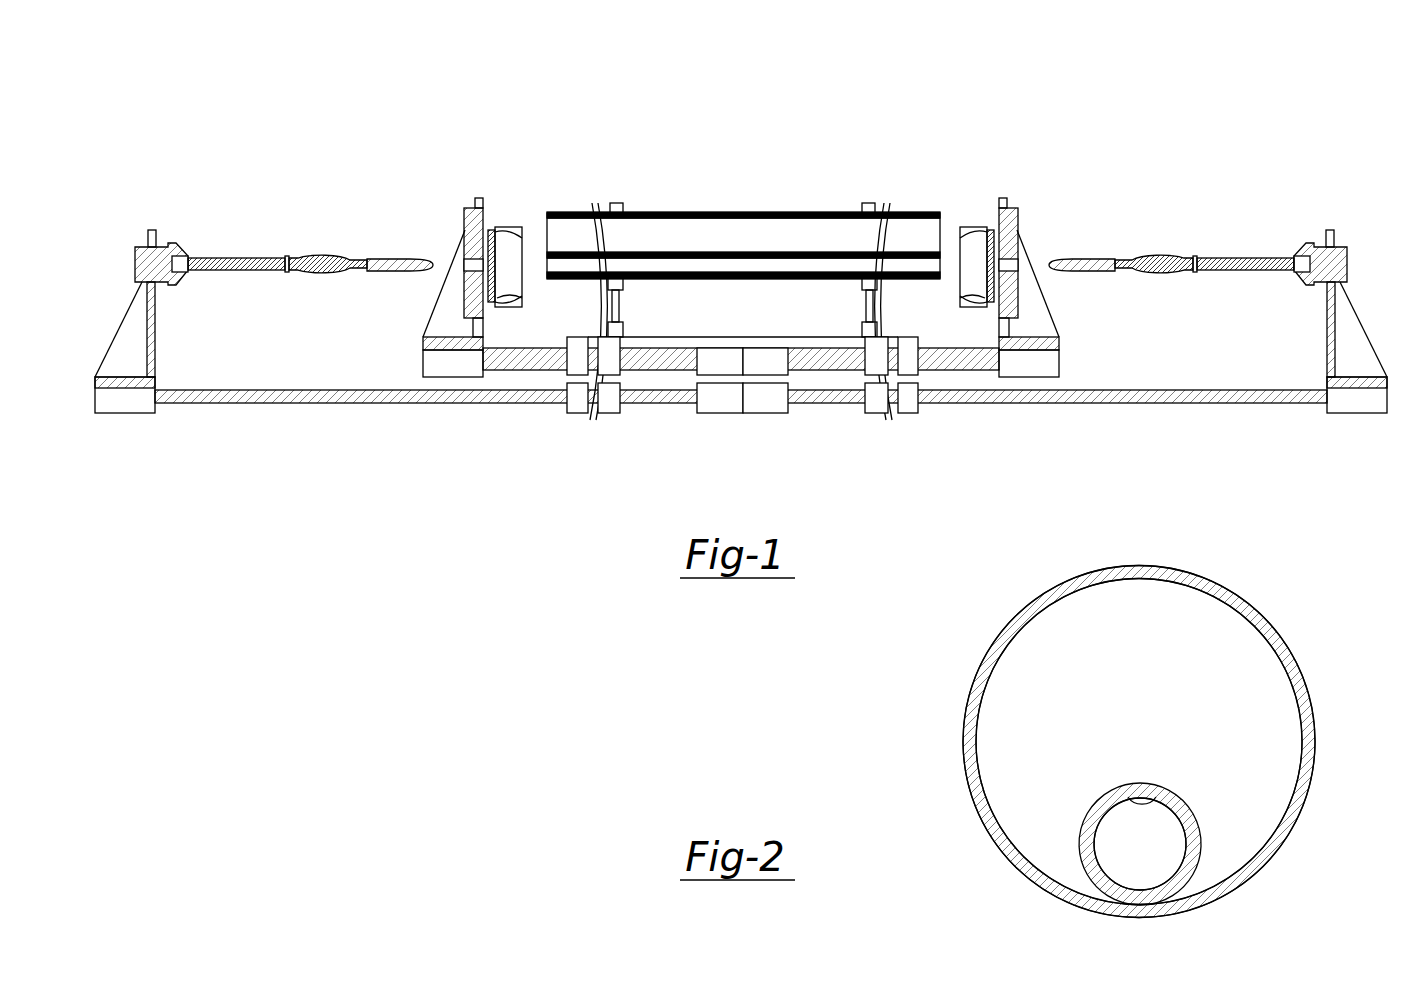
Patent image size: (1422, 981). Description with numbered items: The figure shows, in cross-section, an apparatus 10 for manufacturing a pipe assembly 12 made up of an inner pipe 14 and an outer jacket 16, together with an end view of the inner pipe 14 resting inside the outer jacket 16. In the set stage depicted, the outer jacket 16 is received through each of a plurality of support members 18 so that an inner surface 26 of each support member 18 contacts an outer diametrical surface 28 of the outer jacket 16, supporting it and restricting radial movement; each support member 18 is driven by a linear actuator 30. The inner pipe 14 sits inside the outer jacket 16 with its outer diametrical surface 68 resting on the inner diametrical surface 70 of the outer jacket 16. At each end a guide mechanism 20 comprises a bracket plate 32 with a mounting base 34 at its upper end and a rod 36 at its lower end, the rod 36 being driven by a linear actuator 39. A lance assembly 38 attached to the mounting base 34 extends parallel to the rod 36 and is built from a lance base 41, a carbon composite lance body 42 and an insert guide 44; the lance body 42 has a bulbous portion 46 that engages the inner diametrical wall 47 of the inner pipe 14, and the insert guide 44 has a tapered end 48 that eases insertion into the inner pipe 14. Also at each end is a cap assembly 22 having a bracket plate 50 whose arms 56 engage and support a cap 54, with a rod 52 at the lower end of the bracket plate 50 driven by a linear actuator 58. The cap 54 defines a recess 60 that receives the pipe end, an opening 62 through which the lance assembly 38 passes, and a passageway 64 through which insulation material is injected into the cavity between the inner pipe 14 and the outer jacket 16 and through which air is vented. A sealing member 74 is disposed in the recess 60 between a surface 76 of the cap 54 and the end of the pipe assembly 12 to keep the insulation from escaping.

In FIG. 1, the apparatus 10 is at (912, 86).
In FIG. 1, the pipe assembly 12 is at (668, 113).
In FIG. 2, the pipe assembly 12 is at (1236, 546).
In FIG. 1, the inner pipe 14 is at (725, 251).
In FIG. 2, the inner pipe 14 is at (1120, 777).
In FIG. 1, the outer jacket 16 is at (806, 211).
In FIG. 2, the outer jacket 16 is at (1093, 568).
In FIG. 1, the support member 18 is at (612, 211).
In FIG. 1, the guide mechanism 20 is at (108, 430).
In FIG. 1, the cap assembly 22 is at (405, 340).
In FIG. 1, the inner surface 26 is at (624, 211).
In FIG. 1, the outer diametrical surface 28 is at (757, 212).
In FIG. 2, the outer diametrical surface 28 is at (1278, 632).
In FIG. 1, the linear actuator 30 is at (620, 326).
In FIG. 1, the bracket plate 32 is at (130, 410).
In FIG. 1, the mounting base 34 is at (143, 268).
In FIG. 1, the rod 36 is at (440, 397).
In FIG. 1, the lance assembly 38 is at (218, 252).
In FIG. 1, the linear actuator 39 is at (718, 405).
In FIG. 1, the lance base 41 is at (250, 258).
In FIG. 1, the lance body 42 is at (355, 252).
In FIG. 1, the insert guide 44 is at (406, 262).
In FIG. 1, the bulbous portion 46 is at (310, 257).
In FIG. 1, the inner diametrical wall 47 is at (670, 255).
In FIG. 2, the inner diametrical wall 47 is at (1158, 808).
In FIG. 1, the tapered end 48 is at (436, 273).
In FIG. 1, the bracket plate 50 is at (433, 362).
In FIG. 1, the rod 52 is at (522, 367).
In FIG. 1, the cap 54 is at (493, 201).
In FIG. 1, the arms 56 is at (477, 198).
In FIG. 1, the linear actuator 58 is at (719, 357).
In FIG. 1, the recess 60 is at (514, 258).
In FIG. 1, the opening 62 is at (482, 267).
In FIG. 1, the passageway 64 is at (478, 245).
In FIG. 2, the outer diametrical surface 68 is at (1158, 790).
In FIG. 2, the inner diametrical surface 70 is at (1242, 620).
In FIG. 1, the sealing member 74 is at (500, 230).
In FIG. 1, the surface 76 is at (505, 290).